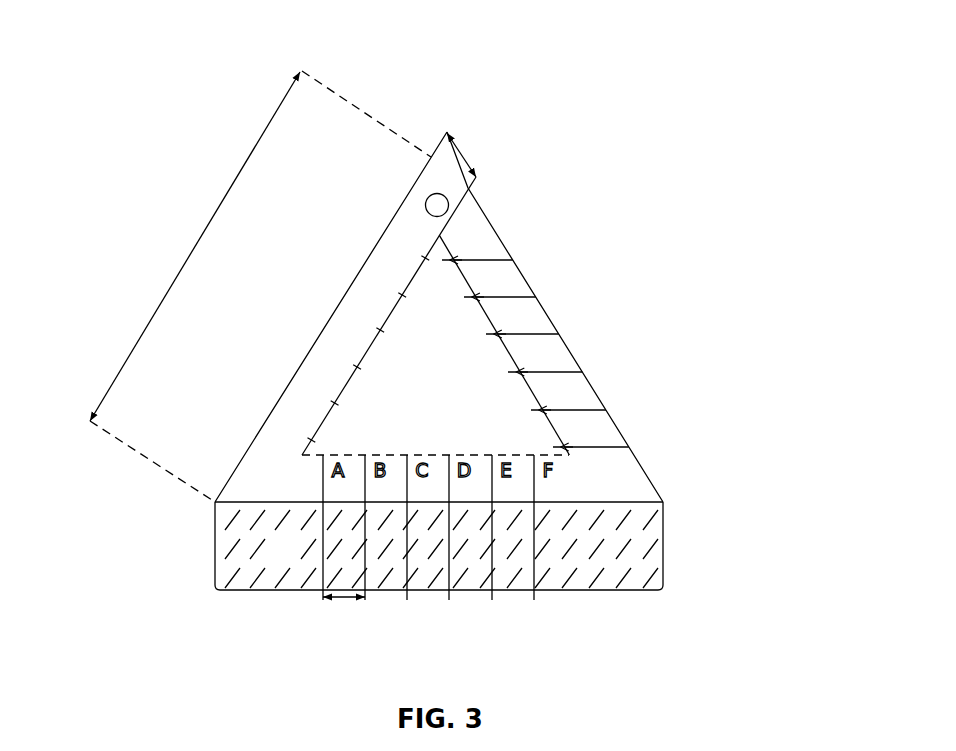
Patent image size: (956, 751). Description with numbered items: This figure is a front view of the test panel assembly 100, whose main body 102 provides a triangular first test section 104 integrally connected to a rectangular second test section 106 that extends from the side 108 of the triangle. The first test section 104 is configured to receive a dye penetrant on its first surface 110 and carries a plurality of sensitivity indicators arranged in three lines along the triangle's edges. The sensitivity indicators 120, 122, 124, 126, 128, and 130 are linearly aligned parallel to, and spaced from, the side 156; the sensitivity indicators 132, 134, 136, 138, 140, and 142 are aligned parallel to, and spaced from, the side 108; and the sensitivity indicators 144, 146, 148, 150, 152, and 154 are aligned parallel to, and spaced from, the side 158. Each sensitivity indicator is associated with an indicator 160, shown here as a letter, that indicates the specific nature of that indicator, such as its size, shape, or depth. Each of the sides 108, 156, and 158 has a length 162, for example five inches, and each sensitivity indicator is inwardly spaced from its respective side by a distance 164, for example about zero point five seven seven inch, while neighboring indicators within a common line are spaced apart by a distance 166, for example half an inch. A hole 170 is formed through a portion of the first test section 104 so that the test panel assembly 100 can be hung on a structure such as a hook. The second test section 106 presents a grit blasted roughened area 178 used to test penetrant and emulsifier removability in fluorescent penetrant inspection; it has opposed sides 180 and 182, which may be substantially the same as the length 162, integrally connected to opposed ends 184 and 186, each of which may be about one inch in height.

The test panel assembly 100 is at (218, 188).
The main body 102 is at (394, 209).
The first test section 104 is at (556, 347).
The second test section 106 is at (556, 553).
The side 108 is at (665, 503).
The first surface 110 is at (468, 212).
The sensitivity indicator 120 is at (311, 440).
The sensitivity indicator 122 is at (335, 403).
The sensitivity indicator 124 is at (357, 367).
The sensitivity indicator 126 is at (380, 330).
The sensitivity indicator 128 is at (402, 295).
The sensitivity indicator 130 is at (425, 258).
The sensitivity indicator 132 is at (323, 460).
The sensitivity indicator 134 is at (365, 460).
The sensitivity indicator 136 is at (407, 460).
The sensitivity indicator 138 is at (449, 460).
The sensitivity indicator 140 is at (492, 460).
The sensitivity indicator 142 is at (534, 460).
The sensitivity indicator 144 is at (458, 262).
The sensitivity indicator 146 is at (480, 298).
The sensitivity indicator 148 is at (502, 335).
The sensitivity indicator 150 is at (524, 373).
The sensitivity indicator 152 is at (546, 411).
The sensitivity indicator 154 is at (570, 458).
The side 156 is at (253, 436).
The side 158 is at (626, 434).
The indicator 160 is at (319, 427).
The length 162 is at (205, 230).
The distance 164 is at (463, 158).
The distance 166 is at (343, 599).
The hole 170 is at (426, 197).
The grit blasted roughened area 178 is at (663, 586).
The side 180 is at (283, 553).
The side 182 is at (248, 591).
The end 184 is at (216, 538).
The end 186 is at (665, 555).